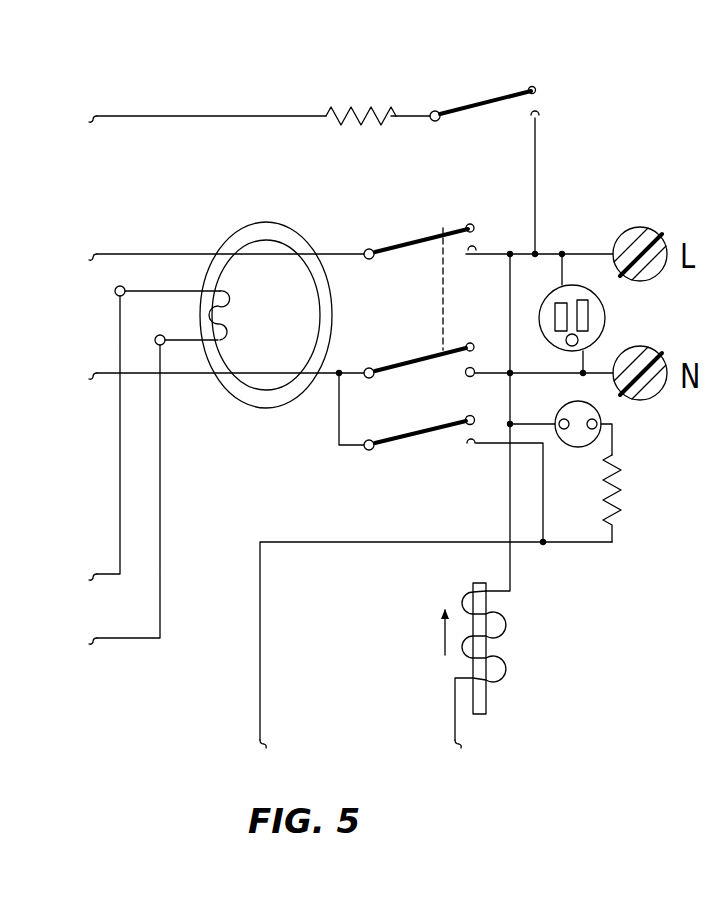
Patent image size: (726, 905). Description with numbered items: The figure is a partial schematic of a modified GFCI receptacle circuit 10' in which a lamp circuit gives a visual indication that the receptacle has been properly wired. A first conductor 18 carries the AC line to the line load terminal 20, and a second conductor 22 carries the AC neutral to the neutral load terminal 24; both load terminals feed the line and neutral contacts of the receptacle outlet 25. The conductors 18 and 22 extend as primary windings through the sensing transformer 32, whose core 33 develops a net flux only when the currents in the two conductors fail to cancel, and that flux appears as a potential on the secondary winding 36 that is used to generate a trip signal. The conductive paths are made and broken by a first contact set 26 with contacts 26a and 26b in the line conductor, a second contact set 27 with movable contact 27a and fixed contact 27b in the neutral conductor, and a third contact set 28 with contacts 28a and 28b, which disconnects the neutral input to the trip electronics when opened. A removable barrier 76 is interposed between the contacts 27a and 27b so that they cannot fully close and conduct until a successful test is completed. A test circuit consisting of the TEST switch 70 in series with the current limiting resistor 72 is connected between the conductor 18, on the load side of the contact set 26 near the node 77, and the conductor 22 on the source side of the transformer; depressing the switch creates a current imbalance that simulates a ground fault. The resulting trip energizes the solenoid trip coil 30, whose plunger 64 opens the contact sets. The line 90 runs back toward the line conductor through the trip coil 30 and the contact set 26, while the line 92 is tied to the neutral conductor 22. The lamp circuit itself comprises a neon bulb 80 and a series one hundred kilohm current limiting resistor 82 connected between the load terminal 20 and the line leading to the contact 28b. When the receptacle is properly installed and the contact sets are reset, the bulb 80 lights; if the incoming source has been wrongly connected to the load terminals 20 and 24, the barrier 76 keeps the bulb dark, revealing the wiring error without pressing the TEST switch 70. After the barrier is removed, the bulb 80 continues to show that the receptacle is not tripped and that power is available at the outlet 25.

The modified GFCI receptacle circuit 10' is at (258, 72).
The current limiting resistor 72 is at (360, 108).
The TEST switch 70 is at (512, 100).
The node 77 is at (538, 250).
The first conductor 18 is at (156, 254).
The second conductor 22 is at (180, 375).
The sensing transformer 32 is at (305, 226).
The core 33 is at (237, 237).
The secondary winding 36 is at (222, 330).
The first contact set 26 is at (421, 236).
The first contact 26a is at (468, 224).
The second contact 26b is at (476, 248).
The second contact set 27 is at (409, 358).
The movable contact 27a is at (470, 342).
The fixed contact 27b is at (466, 378).
The removable barrier 76 is at (449, 366).
The third contact set 28 is at (418, 442).
The first contact 28a is at (476, 418).
The second contact 28b is at (471, 452).
The line 90 is at (510, 571).
The line load terminal 20 is at (645, 230).
The neutral load terminal 24 is at (649, 395).
The receptacle outlet 25 is at (606, 322).
The neon bulb 80 is at (572, 447).
The current limiting resistor 82 is at (615, 490).
The line 92 is at (260, 652).
The solenoid trip coil 30 is at (500, 668).
The solenoid plunger 64 is at (478, 715).